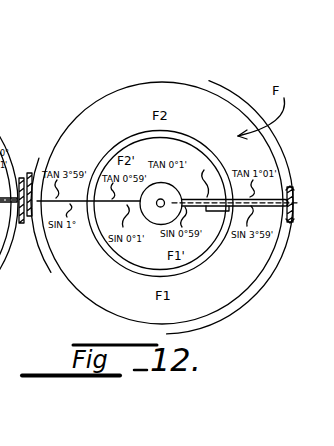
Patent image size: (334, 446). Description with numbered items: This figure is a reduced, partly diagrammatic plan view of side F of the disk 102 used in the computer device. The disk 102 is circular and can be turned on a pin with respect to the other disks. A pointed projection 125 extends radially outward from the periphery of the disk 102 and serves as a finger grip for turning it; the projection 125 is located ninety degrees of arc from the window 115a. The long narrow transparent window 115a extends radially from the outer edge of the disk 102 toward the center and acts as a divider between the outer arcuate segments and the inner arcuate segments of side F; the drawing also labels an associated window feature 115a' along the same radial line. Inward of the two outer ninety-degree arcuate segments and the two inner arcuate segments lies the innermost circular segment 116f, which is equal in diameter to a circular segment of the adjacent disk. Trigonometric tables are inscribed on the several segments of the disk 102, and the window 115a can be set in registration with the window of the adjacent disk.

The disk 102 is at (50, 272).
The pointed projection 125 is at (167, 73).
The window 115a is at (296, 188).
The lug on radial bar 115a' is at (263, 243).
The innermost circular segment 116f is at (164, 200).